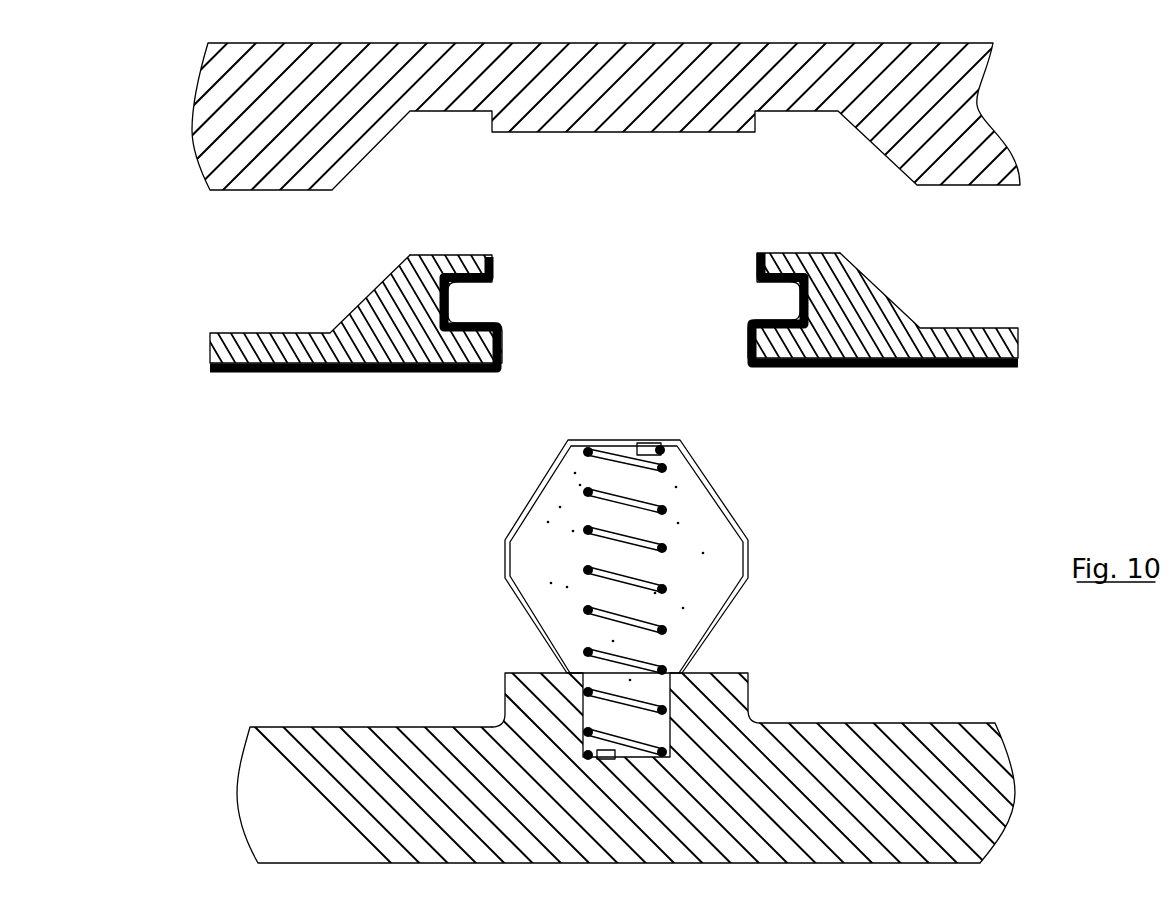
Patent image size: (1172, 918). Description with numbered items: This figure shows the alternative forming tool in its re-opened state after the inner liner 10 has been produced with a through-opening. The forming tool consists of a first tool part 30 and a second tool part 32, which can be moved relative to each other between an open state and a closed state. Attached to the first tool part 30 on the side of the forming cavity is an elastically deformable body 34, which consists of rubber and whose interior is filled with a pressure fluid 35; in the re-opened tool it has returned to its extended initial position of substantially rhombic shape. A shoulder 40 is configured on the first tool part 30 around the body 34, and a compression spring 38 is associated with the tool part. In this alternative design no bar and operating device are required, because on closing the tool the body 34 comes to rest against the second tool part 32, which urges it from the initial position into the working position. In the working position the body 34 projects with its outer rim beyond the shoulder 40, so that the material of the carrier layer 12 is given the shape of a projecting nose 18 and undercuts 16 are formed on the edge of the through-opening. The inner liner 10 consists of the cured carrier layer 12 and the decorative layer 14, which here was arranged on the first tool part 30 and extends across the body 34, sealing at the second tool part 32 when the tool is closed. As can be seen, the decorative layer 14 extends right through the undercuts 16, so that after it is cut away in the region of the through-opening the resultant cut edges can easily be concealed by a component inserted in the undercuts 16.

The inner liner 10 is at (195, 405).
The carrier layer 12 is at (297, 342).
The decorative layer 14 is at (423, 372).
The undercut 16 is at (455, 300).
The projecting nose 18 is at (478, 262).
The first tool part 30 is at (1006, 791).
The second tool part 32 is at (975, 120).
The elastically deformable body 34 is at (750, 562).
The pressure fluid 35 is at (533, 573).
The compression spring 38 is at (662, 630).
The shoulder 40 is at (748, 690).